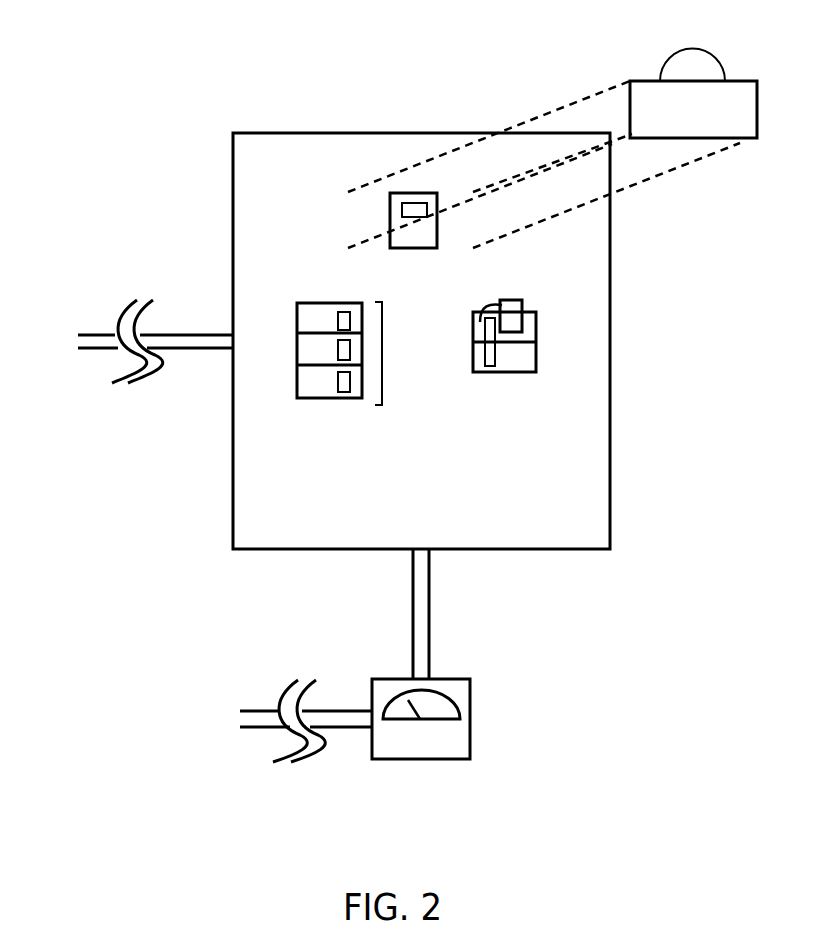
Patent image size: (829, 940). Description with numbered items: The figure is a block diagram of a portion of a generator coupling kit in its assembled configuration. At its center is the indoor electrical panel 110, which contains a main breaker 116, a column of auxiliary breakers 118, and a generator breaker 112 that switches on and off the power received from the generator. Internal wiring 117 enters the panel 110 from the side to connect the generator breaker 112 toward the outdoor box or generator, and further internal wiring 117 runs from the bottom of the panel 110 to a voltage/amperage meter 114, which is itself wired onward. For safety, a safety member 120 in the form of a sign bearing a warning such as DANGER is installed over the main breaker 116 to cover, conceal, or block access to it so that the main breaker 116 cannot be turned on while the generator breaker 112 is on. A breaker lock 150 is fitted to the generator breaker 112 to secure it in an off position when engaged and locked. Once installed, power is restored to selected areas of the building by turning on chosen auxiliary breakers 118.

The indoor electrical panel 110 is at (288, 174).
The generator breaker 112 is at (550, 379).
The voltage/amperage meter 114 is at (470, 719).
The main breaker 116 is at (378, 217).
The internal wiring 117 is at (102, 333).
The auxiliary breakers 118 is at (384, 350).
The safety member 120 is at (602, 59).
The breaker lock 150 is at (522, 305).